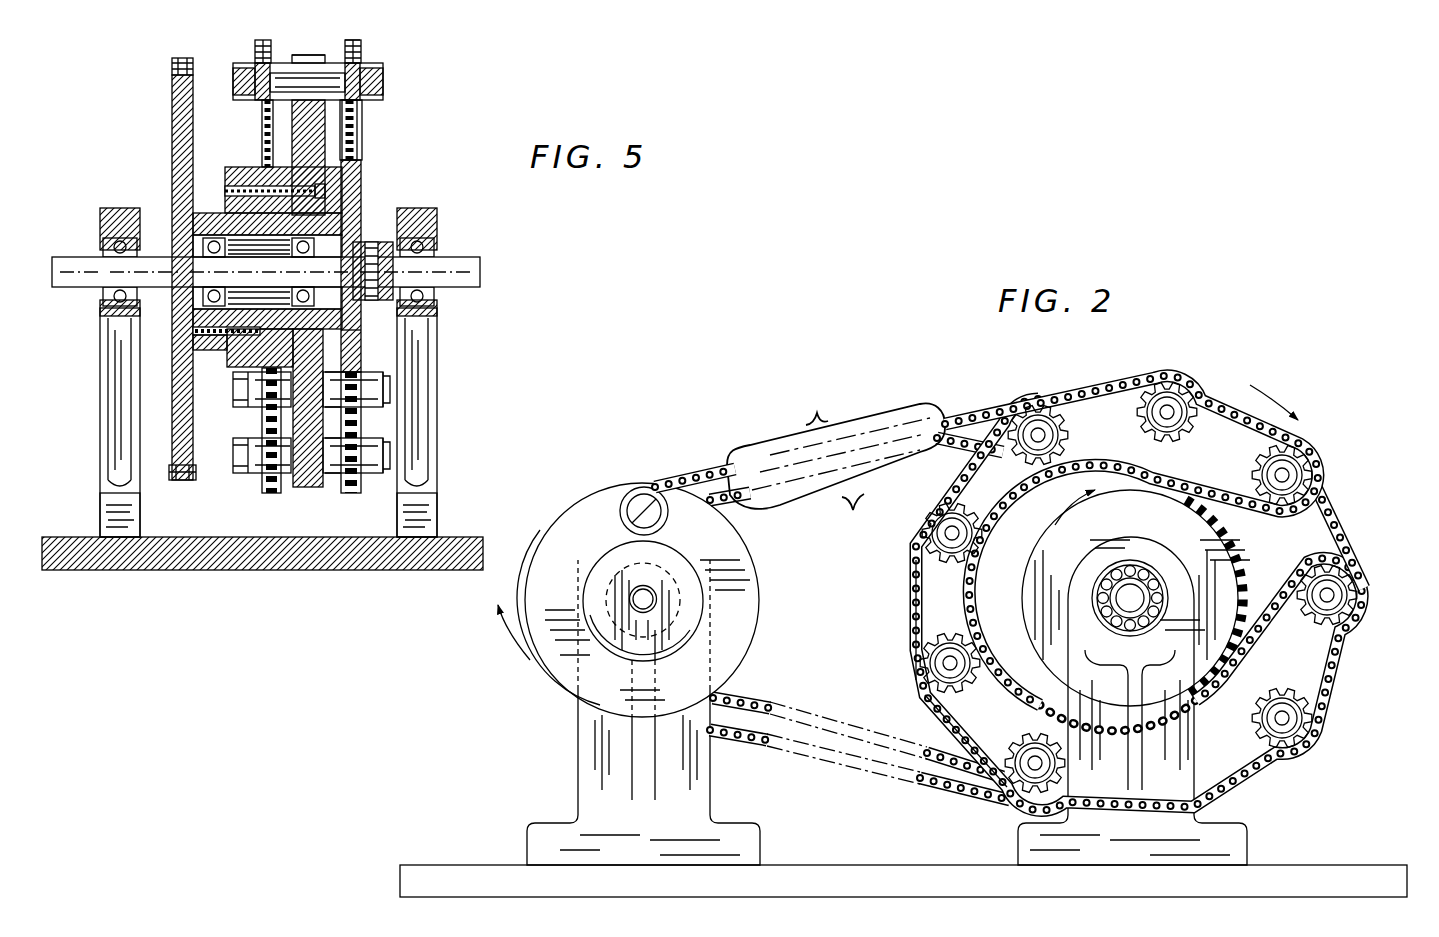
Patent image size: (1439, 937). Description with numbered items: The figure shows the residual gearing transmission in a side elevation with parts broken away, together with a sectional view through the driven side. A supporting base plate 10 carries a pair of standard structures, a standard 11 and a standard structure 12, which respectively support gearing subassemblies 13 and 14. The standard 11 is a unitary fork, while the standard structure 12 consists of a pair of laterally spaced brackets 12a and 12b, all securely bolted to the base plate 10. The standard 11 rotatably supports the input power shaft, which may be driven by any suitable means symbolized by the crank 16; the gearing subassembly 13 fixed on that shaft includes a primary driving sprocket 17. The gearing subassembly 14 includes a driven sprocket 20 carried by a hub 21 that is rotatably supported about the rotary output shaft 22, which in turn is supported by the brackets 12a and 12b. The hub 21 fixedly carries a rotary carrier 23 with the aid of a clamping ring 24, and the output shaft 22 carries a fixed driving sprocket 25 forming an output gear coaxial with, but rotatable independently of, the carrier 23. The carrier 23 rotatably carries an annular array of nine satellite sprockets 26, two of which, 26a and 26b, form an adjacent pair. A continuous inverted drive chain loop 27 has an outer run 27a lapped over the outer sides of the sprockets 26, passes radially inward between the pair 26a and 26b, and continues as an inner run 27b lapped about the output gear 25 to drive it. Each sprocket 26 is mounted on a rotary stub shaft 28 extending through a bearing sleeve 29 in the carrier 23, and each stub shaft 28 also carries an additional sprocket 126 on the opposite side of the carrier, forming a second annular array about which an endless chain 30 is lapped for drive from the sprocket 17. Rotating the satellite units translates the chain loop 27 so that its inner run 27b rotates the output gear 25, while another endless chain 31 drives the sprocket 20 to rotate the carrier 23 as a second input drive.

In FIG. 5, the supporting base plate 10 is at (458, 538).
In FIG. 2, the supporting base plate 10 is at (454, 862).
In FIG. 2, the standard 11 is at (528, 822).
In FIG. 2, the standard structure 12 is at (1012, 826).
In FIG. 5, the bracket 12a is at (98, 406).
In FIG. 5, the bracket 12b is at (440, 388).
In FIG. 2, the gearing subassembly 13 is at (638, 478).
In FIG. 5, the gearing subassembly 14 is at (378, 143).
In FIG. 2, the gearing subassembly 14 is at (1170, 372).
In FIG. 2, the crank 16 is at (575, 660).
In FIG. 2, the primary driving sprocket 17 is at (752, 556).
In FIG. 5, the driven sprocket 20 is at (170, 147).
In FIG. 5, the hub 21 is at (318, 223).
In FIG. 5, the rotary output shaft 22 is at (484, 272).
In FIG. 2, the rotary output shaft 22 is at (1132, 590).
In FIG. 5, the rotary carrier 23 is at (300, 490).
In FIG. 2, the rotary carrier 23 is at (910, 623).
In FIG. 5, the clamping ring 24 is at (238, 370).
In FIG. 5, the driving sprocket 25 is at (368, 338).
In FIG. 2, the driving sprocket 25 is at (1042, 604).
In FIG. 5, the sprockets 26 is at (366, 56).
In FIG. 2, the sprockets 26 is at (1198, 412).
In FIG. 2, the sprocket 26a is at (1322, 630).
In FIG. 2, the sprocket 26b is at (1275, 452).
In FIG. 5, the continuous inverted drive chain loop 27 is at (363, 38).
In FIG. 2, the continuous inverted drive chain loop 27 is at (910, 584).
In FIG. 2, the outer run 27a is at (920, 697).
In FIG. 2, the inner run 27b is at (1104, 468).
In FIG. 5, the rotary stub shaft 28 is at (386, 82).
In FIG. 2, the rotary stub shaft 28 is at (945, 663).
In FIG. 5, the bearing sleeve 29 is at (330, 60).
In FIG. 5, the endless chain 30 is at (260, 148).
In FIG. 2, the endless chain 30 is at (770, 768).
In FIG. 5, the endless chain 31 is at (176, 482).
In FIG. 2, the endless chain 31 is at (762, 712).
In FIG. 5, the additional sprocket 126 is at (258, 62).